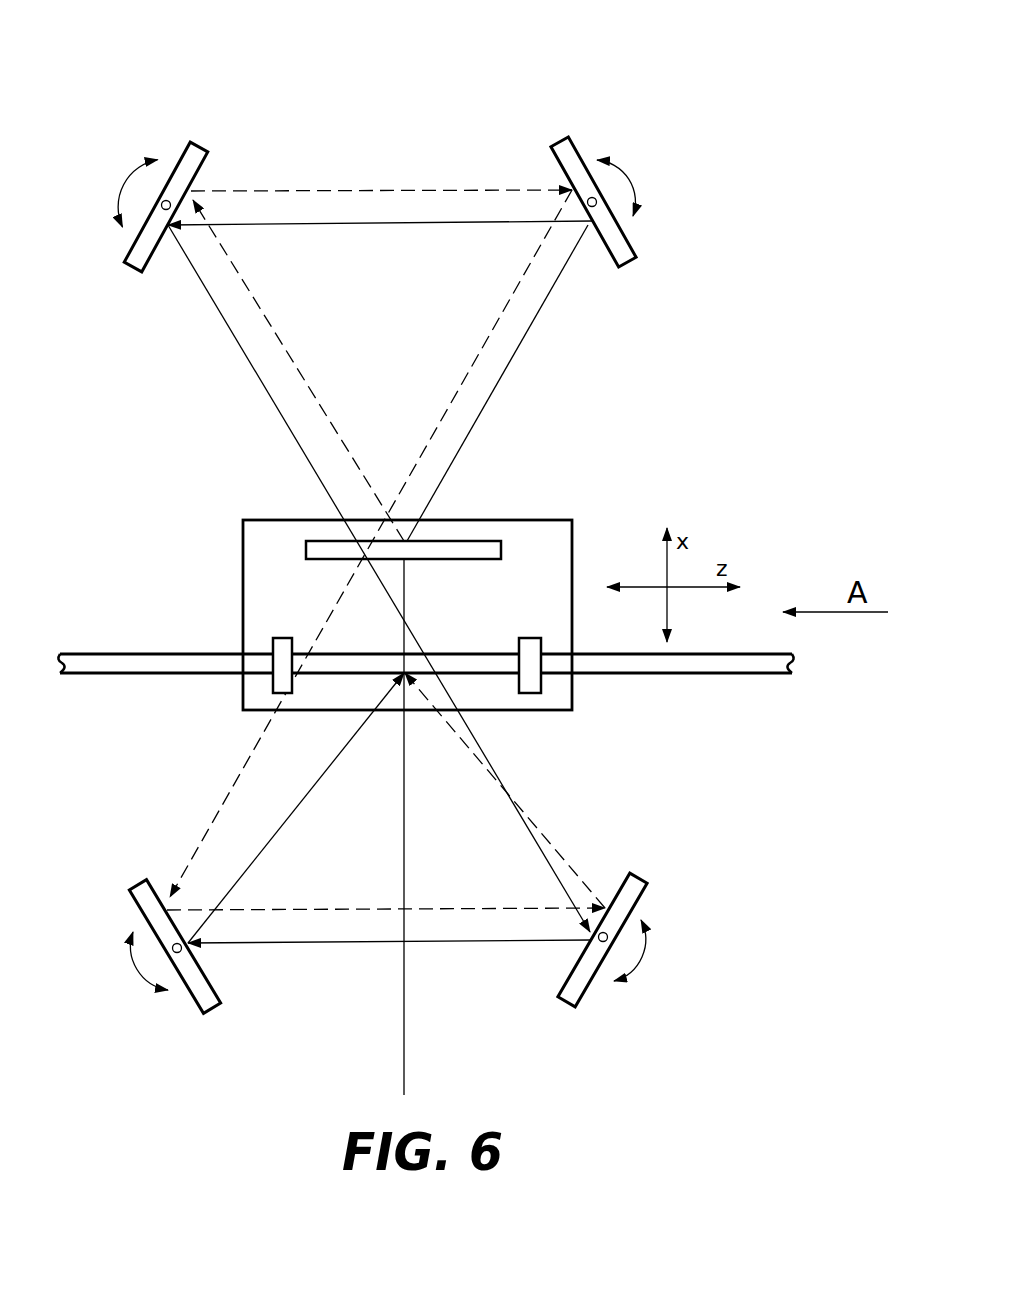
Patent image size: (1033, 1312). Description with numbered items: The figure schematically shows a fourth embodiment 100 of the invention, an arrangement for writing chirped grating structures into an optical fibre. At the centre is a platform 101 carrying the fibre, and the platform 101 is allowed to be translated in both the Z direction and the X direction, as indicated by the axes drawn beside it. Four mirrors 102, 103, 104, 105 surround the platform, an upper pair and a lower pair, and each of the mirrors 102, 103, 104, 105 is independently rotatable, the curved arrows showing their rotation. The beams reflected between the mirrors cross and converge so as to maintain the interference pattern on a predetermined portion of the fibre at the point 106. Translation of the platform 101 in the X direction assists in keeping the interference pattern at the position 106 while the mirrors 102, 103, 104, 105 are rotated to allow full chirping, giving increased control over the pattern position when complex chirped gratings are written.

The embodiment 100 is at (727, 72).
The platform 101 is at (553, 538).
The mirror 102 is at (622, 258).
The mirror 103 is at (137, 266).
The mirror 104 is at (210, 1000).
The mirror 105 is at (575, 995).
The point 106 is at (395, 700).